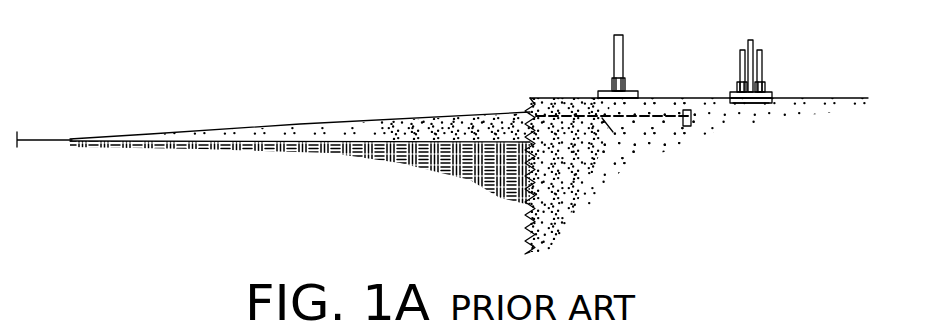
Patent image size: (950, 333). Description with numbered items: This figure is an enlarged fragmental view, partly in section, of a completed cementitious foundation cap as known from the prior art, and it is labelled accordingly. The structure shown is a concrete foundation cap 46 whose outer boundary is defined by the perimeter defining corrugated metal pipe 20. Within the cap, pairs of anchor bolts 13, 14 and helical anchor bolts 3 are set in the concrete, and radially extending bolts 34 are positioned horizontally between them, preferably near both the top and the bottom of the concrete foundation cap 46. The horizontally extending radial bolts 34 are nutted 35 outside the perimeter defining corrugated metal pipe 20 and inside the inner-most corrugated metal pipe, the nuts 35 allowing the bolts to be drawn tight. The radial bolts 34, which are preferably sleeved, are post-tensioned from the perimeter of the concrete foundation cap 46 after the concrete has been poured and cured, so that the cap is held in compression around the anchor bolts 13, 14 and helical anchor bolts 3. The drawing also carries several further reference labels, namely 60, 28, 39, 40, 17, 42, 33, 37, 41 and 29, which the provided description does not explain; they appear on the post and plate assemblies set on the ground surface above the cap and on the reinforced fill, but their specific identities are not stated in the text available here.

The helical anchor bolts 3 is at (623, 35).
The central post 60 is at (750, 42).
The anchor bolts 14 is at (762, 52).
The pole base fitting 28 is at (627, 80).
The anchor bolts 13 is at (740, 72).
The post base fitting 39 is at (762, 82).
The base plate 40 is at (600, 92).
The ground surface 17 is at (638, 93).
The post base fitting 42 is at (735, 93).
The base plate 33 is at (770, 95).
The footing 37 is at (773, 100).
The footing bottom 41 is at (752, 105).
The nuts 35 is at (528, 120).
The radially extending bolts 34 is at (635, 157).
The concrete foundation cap 46 is at (588, 153).
The geotextile reinforcement 29 is at (502, 173).
The perimeter defining corrugated metal pipe 20 is at (528, 206).